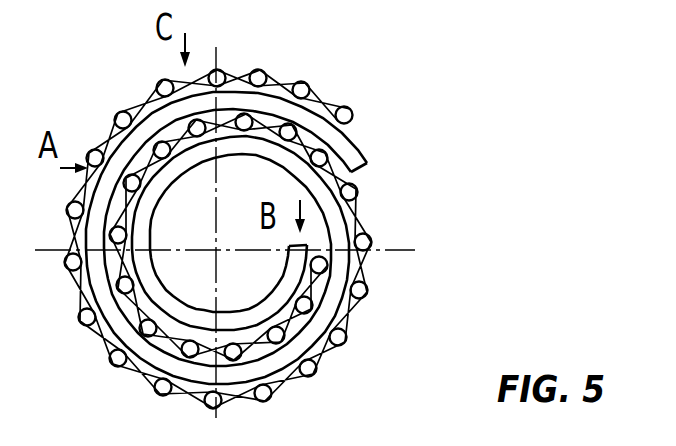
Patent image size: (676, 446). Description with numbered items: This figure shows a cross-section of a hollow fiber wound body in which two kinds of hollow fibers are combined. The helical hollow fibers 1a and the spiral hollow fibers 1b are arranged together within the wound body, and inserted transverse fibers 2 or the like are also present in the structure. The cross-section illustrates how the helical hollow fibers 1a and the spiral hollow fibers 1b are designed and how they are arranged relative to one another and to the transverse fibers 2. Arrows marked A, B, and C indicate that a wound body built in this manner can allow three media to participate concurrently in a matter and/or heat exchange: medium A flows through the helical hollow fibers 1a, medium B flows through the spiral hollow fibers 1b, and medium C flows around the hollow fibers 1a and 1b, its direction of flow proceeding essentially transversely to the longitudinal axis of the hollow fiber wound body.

The transverse fibers 2 is at (313, 98).
The helical hollow fibers 1a is at (363, 242).
The spiral hollow fibers 1b is at (329, 313).